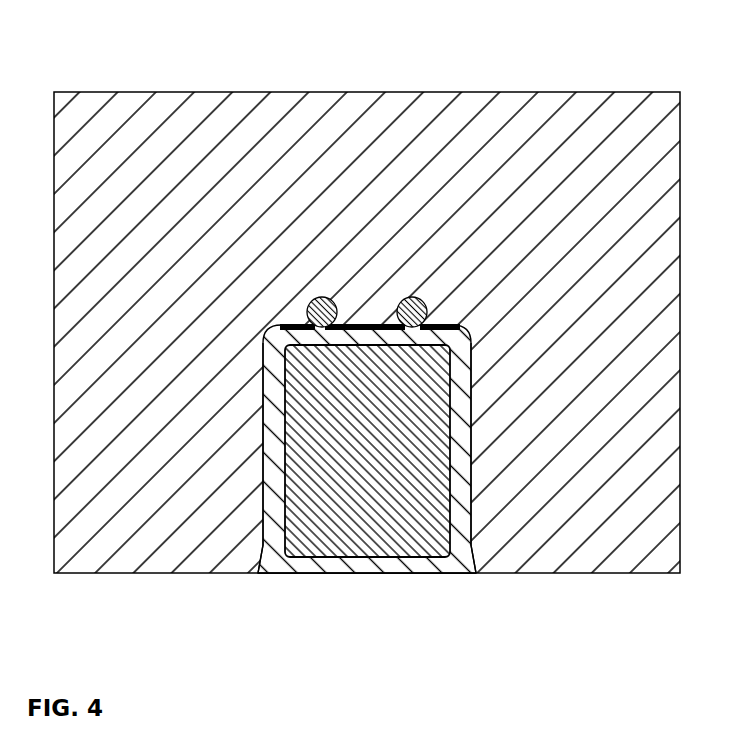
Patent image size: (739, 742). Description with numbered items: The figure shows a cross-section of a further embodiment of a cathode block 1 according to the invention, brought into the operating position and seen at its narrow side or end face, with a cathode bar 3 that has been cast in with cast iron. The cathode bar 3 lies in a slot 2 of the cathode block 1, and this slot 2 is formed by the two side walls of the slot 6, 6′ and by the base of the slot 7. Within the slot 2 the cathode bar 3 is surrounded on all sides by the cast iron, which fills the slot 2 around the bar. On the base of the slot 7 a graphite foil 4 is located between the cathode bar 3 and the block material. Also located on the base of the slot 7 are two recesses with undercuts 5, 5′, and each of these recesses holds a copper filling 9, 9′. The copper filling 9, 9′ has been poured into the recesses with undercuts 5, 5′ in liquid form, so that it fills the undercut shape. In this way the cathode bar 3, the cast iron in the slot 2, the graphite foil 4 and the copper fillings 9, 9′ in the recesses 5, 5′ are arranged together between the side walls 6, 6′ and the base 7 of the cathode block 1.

The cathode block 1 is at (168, 545).
The slot 2 is at (300, 560).
The cathode bar 3 is at (362, 535).
The graphite foil 4 is at (472, 348).
The recess with undercut 5 is at (305, 324).
The recess with undercut 5′ is at (435, 323).
The side wall of slot 6 is at (266, 448).
The side wall of slot 6′ is at (474, 448).
The base of the slot 7 is at (367, 323).
The copper filling 9 is at (310, 299).
The copper filling 9′ is at (424, 298).